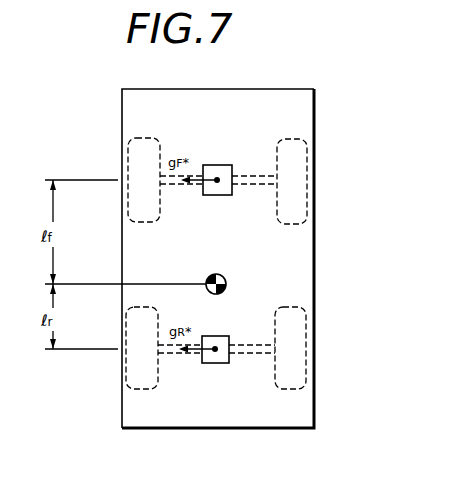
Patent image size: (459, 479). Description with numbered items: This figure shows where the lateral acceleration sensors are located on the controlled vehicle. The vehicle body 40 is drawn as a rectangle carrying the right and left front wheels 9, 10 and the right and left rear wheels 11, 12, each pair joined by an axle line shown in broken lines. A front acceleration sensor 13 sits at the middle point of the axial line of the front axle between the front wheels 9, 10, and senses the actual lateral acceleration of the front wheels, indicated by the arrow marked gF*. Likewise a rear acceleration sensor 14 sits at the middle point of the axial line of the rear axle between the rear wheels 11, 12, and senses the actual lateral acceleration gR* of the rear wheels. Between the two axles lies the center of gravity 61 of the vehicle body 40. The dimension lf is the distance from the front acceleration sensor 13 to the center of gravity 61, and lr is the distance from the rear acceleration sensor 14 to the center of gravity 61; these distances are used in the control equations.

The vehicle body 40 is at (316, 113).
The front wheel 9 is at (295, 139).
The front wheel 10 is at (148, 138).
The rear wheel 11 is at (279, 389).
The rear wheel 12 is at (153, 389).
The front acceleration sensor 13 is at (222, 165).
The rear acceleration sensor 14 is at (218, 363).
The center of gravity 61 is at (218, 274).